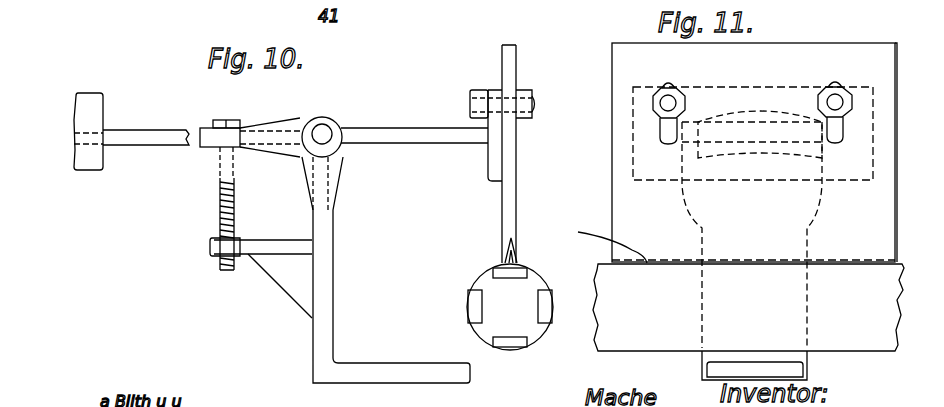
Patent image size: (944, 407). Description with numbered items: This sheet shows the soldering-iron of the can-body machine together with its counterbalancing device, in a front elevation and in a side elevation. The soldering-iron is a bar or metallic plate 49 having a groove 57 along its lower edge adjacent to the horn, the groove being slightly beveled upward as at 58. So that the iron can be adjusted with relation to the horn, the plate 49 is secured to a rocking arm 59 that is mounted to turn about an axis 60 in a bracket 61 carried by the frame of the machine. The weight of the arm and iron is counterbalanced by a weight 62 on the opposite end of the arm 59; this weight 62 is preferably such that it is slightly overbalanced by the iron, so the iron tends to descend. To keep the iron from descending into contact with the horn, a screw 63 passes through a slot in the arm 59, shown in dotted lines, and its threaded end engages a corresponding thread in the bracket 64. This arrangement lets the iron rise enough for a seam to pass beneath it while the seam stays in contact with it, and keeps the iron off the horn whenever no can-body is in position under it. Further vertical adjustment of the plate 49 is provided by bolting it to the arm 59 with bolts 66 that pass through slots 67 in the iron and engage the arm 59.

In FIG. 10, the metallic plate 49 is at (512, 160).
In FIG. 11, the metallic plate 49 is at (620, 132).
In FIG. 10, the groove 57 is at (515, 260).
In FIG. 10, the beveled portion 58 is at (505, 252).
In FIG. 11, the beveled portion 58 is at (612, 264).
In FIG. 10, the rocking arm 59 is at (394, 132).
In FIG. 10, the axis 60 is at (320, 132).
In FIG. 10, the bracket 61 is at (327, 226).
In FIG. 10, the weight 62 is at (93, 166).
In FIG. 10, the screw 63 is at (220, 178).
In FIG. 10, the bracket 64 is at (260, 248).
In FIG. 11, the bolts 66 is at (666, 105).
In FIG. 11, the slots 67 is at (832, 82).